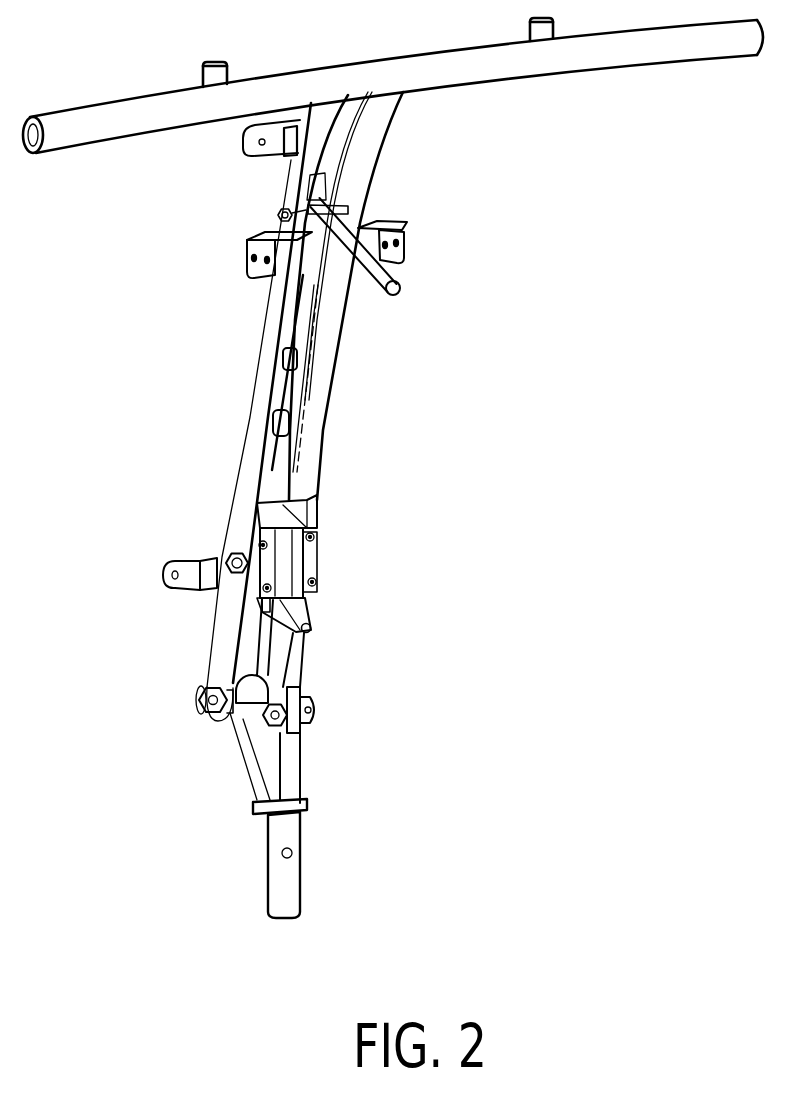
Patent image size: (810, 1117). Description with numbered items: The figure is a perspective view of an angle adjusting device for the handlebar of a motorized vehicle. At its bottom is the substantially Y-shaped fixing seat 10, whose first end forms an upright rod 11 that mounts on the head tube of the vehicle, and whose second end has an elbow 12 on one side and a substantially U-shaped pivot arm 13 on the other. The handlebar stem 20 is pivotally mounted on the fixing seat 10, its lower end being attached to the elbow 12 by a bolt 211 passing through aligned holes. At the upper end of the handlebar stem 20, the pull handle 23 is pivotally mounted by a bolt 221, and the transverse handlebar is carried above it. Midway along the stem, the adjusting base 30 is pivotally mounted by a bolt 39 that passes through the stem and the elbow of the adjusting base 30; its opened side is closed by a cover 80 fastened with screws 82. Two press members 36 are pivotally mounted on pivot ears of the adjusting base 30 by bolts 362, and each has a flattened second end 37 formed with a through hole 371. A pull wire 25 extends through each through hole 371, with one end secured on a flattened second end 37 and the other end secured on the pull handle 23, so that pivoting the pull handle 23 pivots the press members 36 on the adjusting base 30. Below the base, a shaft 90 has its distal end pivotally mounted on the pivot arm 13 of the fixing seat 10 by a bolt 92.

The fixing seat 10 is at (238, 803).
The upright rod 11 is at (293, 830).
The elbow 12 is at (232, 718).
The pivot arm 13 is at (303, 733).
The handlebar stem 20 is at (250, 475).
The bolt 211 is at (199, 700).
The bolt 221 is at (283, 214).
The pull handle 23 is at (405, 277).
The pull wire 25 is at (305, 379).
The adjusting base 30 is at (300, 568).
The press member 36 is at (304, 612).
The bolt 362 is at (262, 607).
The flattened second end 37 is at (308, 633).
The through hole 371 is at (308, 631).
The bolt 39 is at (228, 557).
The cover 80 is at (310, 569).
The screw 82 is at (314, 538).
The shaft 90 is at (283, 660).
The bolt 92 is at (265, 722).